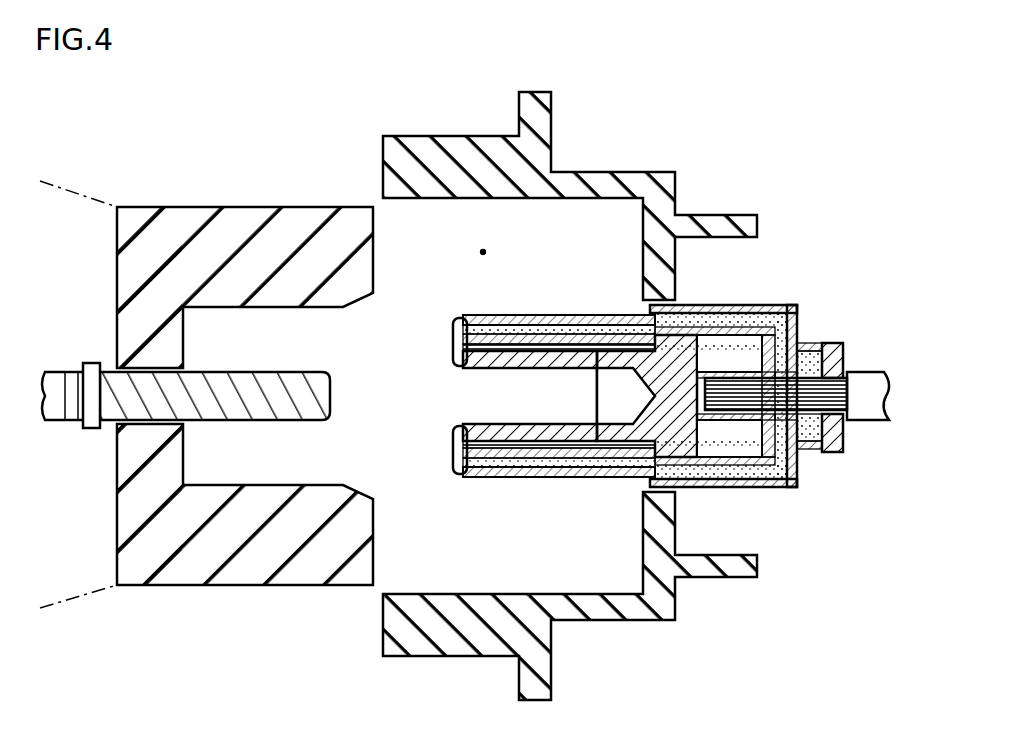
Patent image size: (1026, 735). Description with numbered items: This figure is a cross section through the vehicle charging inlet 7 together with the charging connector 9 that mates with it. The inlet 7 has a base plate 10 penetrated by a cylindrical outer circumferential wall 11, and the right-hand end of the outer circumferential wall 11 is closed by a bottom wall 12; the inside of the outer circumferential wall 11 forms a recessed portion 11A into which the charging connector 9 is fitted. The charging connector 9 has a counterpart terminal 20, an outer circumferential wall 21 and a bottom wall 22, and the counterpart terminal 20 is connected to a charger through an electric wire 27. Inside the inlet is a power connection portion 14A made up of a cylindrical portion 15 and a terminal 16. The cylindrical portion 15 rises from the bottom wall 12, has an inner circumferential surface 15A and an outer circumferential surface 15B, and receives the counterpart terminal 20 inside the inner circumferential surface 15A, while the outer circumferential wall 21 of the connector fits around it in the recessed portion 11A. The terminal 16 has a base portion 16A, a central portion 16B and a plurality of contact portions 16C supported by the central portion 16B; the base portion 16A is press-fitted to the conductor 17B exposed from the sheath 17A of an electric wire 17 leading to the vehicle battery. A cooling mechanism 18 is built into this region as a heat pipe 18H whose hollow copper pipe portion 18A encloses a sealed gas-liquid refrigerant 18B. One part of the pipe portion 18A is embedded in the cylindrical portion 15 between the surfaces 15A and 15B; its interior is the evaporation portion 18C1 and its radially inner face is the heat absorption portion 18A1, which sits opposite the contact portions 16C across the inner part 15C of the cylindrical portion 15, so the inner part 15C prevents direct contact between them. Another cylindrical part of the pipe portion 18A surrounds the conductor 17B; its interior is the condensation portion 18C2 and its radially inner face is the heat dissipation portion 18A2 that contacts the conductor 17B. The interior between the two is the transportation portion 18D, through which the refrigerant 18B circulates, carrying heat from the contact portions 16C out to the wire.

The inlet 7 is at (771, 151).
The charging connector 9 is at (95, 142).
The base plate 10 is at (535, 120).
The outer circumferential wall 11 is at (458, 186).
The recessed portion 11A is at (483, 252).
The bottom wall 12 is at (655, 233).
The power connection portion 14A is at (421, 426).
The cylindrical portion 15 is at (443, 344).
The inner circumferential surface 15A is at (540, 368).
The outer circumferential surface 15B is at (520, 315).
The inner part 15C is at (557, 353).
The terminal 16 is at (637, 532).
The base portion 16A is at (645, 400).
The central portion 16B is at (552, 360).
The contact portions 16C is at (540, 357).
The electric wire 17 is at (897, 534).
The sheath 17A is at (868, 400).
The conductor 17B is at (800, 405).
The cooling mechanism 18 is at (837, 298).
The pipe portion 18A is at (797, 325).
The heat absorption portion 18A1 is at (580, 362).
The heat dissipation portion 18A2 is at (825, 382).
The refrigerant 18B is at (785, 330).
The evaporation portion 18C1 is at (577, 347).
The condensation portion 18C2 is at (800, 365).
The transportation portion 18D is at (718, 313).
The heat pipe 18H is at (847, 263).
The counterpart terminal 20 is at (283, 396).
The outer circumferential wall 21 is at (266, 258).
The bottom wall 22 is at (152, 327).
The electric wire 27 is at (55, 395).